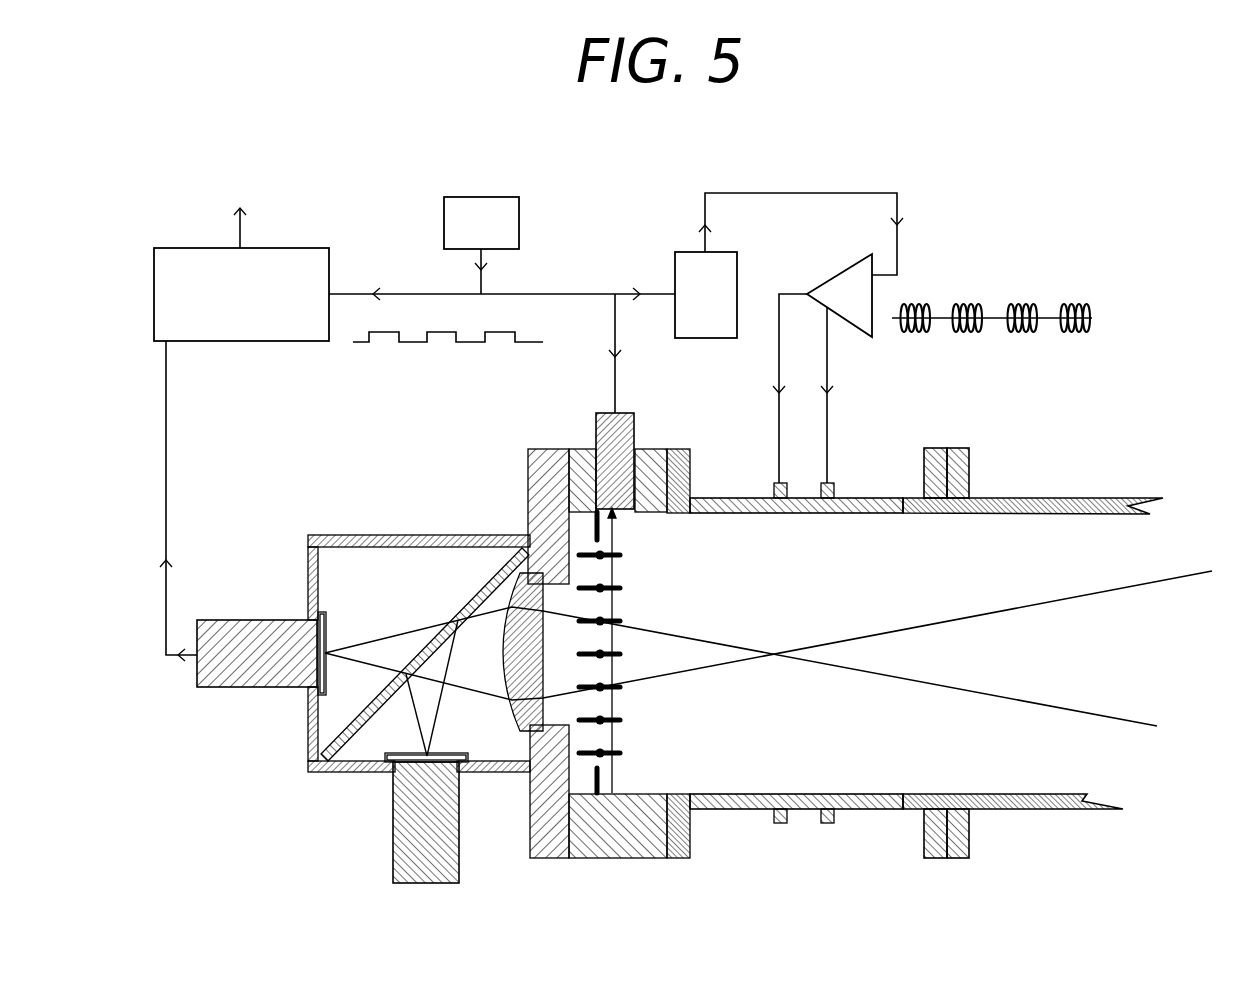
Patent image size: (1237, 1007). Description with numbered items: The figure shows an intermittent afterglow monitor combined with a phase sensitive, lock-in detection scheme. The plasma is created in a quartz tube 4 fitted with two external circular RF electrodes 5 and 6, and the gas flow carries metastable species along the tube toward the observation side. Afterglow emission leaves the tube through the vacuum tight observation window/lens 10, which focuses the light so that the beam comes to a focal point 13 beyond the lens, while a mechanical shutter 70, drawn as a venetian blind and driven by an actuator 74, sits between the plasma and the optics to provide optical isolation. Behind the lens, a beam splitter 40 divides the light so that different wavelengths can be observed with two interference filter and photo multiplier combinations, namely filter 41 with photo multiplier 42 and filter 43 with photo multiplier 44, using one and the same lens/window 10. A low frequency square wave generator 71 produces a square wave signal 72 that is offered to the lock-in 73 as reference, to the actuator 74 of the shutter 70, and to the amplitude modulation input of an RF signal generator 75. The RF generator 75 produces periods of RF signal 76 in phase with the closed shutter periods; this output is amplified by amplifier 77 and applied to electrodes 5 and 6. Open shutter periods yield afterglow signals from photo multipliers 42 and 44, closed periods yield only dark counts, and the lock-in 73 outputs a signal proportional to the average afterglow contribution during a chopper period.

The quartz tube 4 is at (753, 498).
The RF electrode 5 is at (834, 484).
The RF electrode 6 is at (774, 485).
The observation window/lens 10 is at (520, 588).
The focal point of beam 13 is at (773, 650).
The beam splitter 40 is at (318, 742).
The interference filter 41 is at (330, 614).
The photo multiplier 42 is at (255, 633).
The interference filter 43 is at (382, 756).
The photo multiplier 44 is at (393, 882).
The mechanical shutter 70 is at (617, 583).
The low frequency square wave generator 71 is at (481, 223).
The square wave signal 72 is at (400, 343).
The lock-in 73 is at (241, 294).
The actuator 74 is at (634, 420).
The RF signal generator 75 is at (706, 295).
The RF signal 76 is at (1007, 332).
The amplifier 77 is at (839, 295).